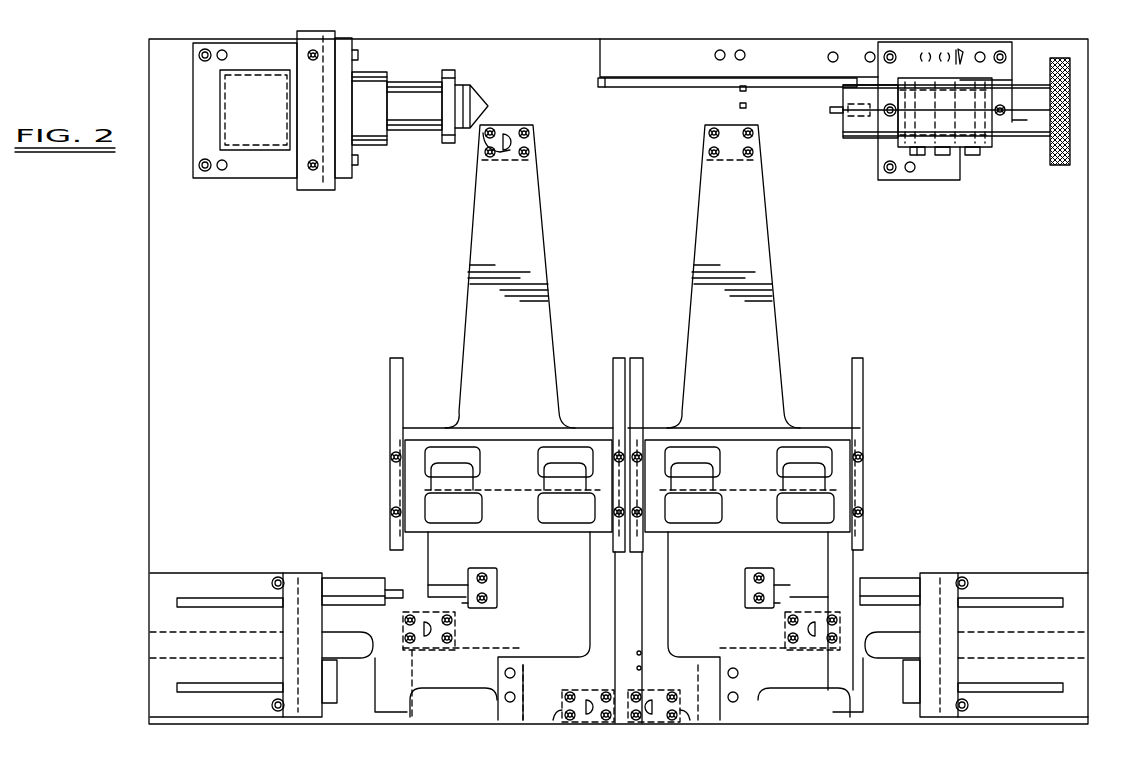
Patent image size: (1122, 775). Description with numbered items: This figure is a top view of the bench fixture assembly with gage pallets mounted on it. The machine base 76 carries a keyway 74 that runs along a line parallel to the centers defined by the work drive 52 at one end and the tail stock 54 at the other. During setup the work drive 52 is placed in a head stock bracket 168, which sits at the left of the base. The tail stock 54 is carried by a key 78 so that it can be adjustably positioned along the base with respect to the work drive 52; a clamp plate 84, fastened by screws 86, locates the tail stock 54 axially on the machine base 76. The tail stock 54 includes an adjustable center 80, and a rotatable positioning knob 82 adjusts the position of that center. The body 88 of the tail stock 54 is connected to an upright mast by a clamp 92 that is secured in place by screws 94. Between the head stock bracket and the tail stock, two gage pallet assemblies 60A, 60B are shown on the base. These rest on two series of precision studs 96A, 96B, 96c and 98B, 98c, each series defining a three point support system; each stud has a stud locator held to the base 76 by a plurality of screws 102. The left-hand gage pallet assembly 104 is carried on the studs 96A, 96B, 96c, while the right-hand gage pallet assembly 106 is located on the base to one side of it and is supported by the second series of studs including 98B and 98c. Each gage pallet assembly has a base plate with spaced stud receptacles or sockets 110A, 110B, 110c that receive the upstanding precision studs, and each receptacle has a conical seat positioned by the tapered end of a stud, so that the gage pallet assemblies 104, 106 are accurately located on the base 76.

The work drive 52 is at (380, 72).
The tail stock 54 is at (960, 57).
The gage pallet assembly 60A is at (380, 401).
The gage pallet assembly 60B is at (878, 396).
The keyway 74 is at (640, 76).
The base 76 is at (1075, 182).
The key 78 is at (766, 77).
The adjustable center 80 is at (833, 108).
The rotatable positioning knob 82 is at (1070, 67).
The clamp plate 84 is at (995, 42).
The screws 86 is at (895, 52).
The body 88 is at (1025, 138).
The clamp 92 is at (897, 142).
The screws 94 is at (920, 158).
The precision stud 96A is at (497, 152).
The precision stud 96B is at (585, 700).
The precision stud 96c is at (450, 625).
The precision stud 98B is at (655, 700).
The precision stud 98c is at (820, 630).
The screws 102 is at (530, 128).
The gage pallet assembly 104 is at (592, 276).
The gage pallet assembly 106 is at (816, 282).
The stud receptacle 110A is at (537, 142).
The stud receptacle 110B is at (600, 695).
The stud receptacle 110c is at (420, 625).
The head stock bracket 168 is at (282, 28).